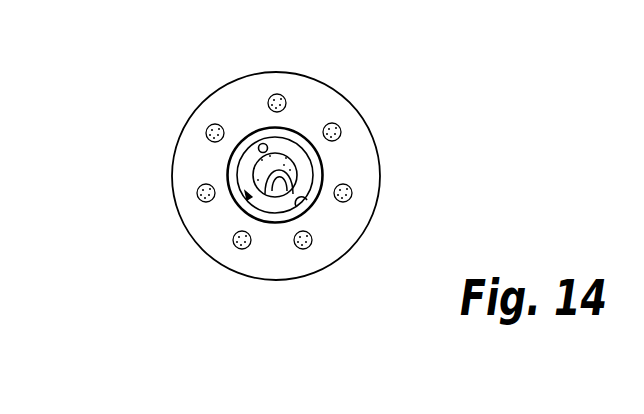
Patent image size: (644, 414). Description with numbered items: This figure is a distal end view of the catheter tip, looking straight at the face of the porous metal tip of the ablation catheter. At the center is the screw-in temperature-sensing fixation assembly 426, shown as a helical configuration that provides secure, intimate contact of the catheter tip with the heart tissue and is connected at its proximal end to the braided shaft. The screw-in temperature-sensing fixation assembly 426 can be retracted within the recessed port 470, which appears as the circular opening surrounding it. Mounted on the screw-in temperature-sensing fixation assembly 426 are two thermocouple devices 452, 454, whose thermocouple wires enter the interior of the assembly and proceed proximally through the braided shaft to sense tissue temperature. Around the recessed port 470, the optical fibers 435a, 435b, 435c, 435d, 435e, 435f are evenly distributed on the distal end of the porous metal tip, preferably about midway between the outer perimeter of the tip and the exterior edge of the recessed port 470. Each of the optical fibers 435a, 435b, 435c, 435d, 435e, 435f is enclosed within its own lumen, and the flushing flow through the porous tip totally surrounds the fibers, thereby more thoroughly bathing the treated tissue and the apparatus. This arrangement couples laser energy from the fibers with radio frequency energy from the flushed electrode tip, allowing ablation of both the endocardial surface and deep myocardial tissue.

The screw-in temperature-sensing fixation assembly 426 is at (289, 140).
The thermocouple device 454 is at (262, 144).
The thermocouple device 452 is at (248, 199).
The recessed port 470 is at (299, 205).
The optical fiber 435a is at (341, 131).
The optical fiber 435b is at (279, 95).
The optical fiber 435c is at (210, 128).
The optical fiber 435d is at (197, 192).
The optical fiber 435e is at (239, 249).
The optical fiber 435f is at (311, 246).